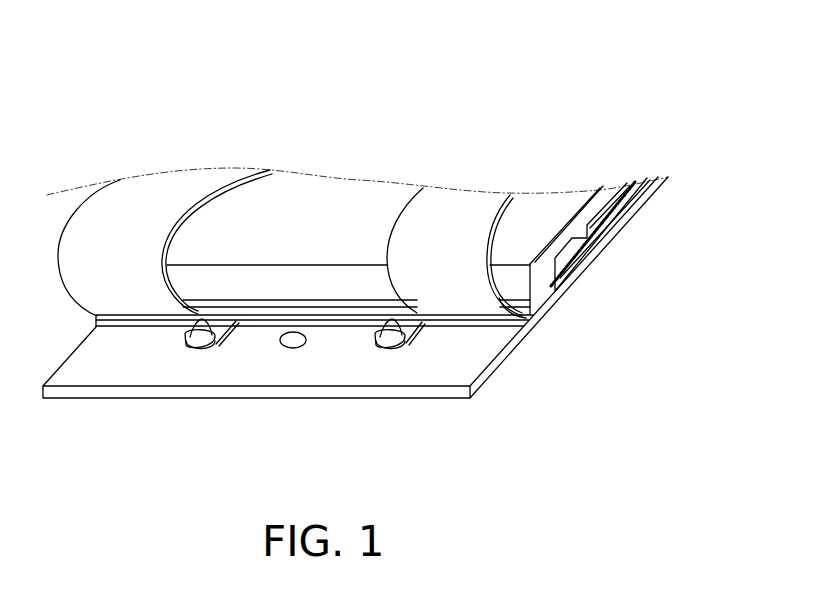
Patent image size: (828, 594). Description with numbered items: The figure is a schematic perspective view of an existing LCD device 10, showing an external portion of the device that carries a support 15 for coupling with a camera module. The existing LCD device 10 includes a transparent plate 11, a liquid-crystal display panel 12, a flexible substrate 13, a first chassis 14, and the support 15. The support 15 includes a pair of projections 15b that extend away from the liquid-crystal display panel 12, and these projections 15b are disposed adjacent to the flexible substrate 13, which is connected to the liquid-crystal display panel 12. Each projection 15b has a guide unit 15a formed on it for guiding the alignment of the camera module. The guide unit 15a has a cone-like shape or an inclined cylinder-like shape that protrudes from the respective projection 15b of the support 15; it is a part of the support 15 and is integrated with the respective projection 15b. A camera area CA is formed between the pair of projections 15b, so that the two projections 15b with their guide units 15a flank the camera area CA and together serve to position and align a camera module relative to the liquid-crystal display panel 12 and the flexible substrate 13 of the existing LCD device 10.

The LCD device 10 is at (663, 105).
The transparent plate 11 is at (468, 362).
The liquid-crystal display panel 12 is at (598, 218).
The flexible substrate 13 is at (512, 326).
The first chassis 14 is at (597, 195).
The support 15 is at (284, 379).
The guide unit 15a is at (188, 330).
The projections 15b is at (233, 322).
The camera area CA is at (291, 349).